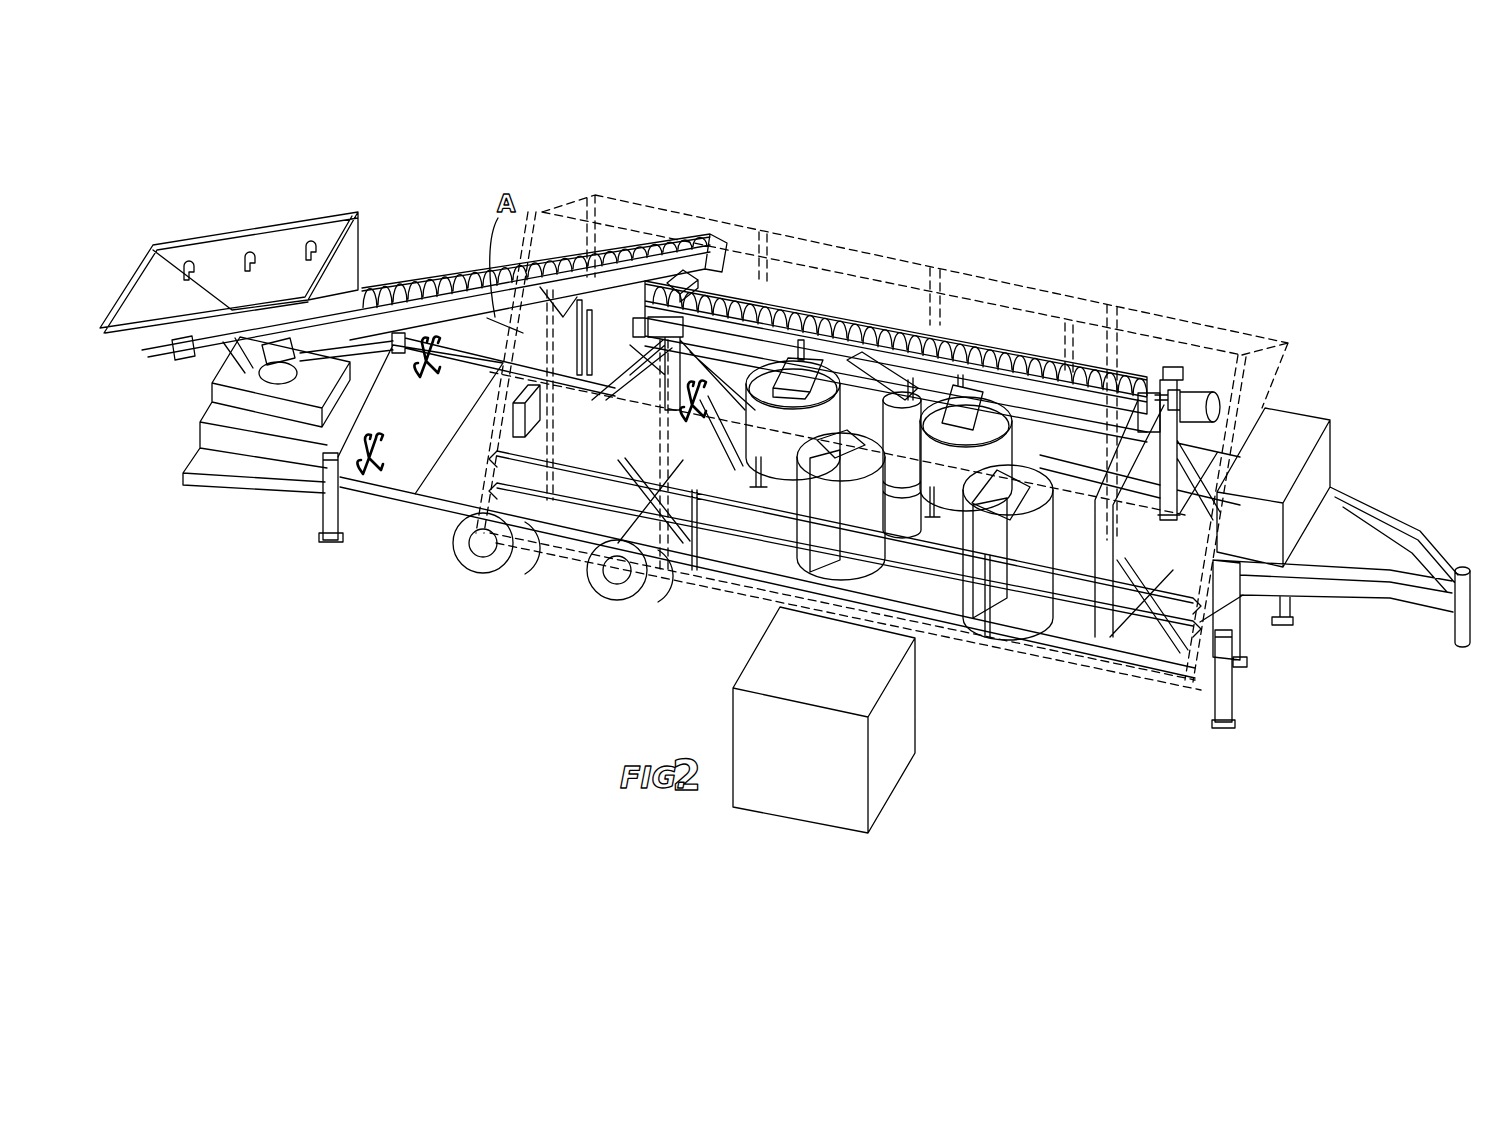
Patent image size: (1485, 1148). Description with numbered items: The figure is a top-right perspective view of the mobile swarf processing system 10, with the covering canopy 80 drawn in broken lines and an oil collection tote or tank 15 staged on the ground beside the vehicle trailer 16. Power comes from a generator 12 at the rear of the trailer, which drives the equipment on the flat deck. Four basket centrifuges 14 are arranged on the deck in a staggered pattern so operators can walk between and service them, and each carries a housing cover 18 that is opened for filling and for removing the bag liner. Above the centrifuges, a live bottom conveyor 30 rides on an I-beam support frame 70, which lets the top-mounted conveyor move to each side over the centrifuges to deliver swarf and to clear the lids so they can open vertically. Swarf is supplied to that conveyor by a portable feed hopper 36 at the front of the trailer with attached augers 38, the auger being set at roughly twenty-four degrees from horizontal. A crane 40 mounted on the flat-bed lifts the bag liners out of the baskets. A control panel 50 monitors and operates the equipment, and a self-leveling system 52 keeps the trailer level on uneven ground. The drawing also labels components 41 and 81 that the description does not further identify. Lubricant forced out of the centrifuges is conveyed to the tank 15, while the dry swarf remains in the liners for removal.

The mobile treatment system 10 is at (490, 605).
The generator 12 is at (1312, 423).
The basket centrifuge 14 is at (800, 490).
The tote or tank 15 is at (811, 776).
The trailer 16 is at (417, 500).
The housing cover 18 is at (767, 380).
The live bottom conveyor 30 is at (948, 347).
The portable feed hopper 36 is at (272, 257).
The auger 38 is at (437, 278).
The crane 40 is at (645, 500).
The support brace 41 is at (717, 510).
The control panel 50 is at (510, 410).
The self-leveling system 52 is at (315, 513).
The I-beam support frame 70 is at (1165, 373).
The canopy 80 is at (847, 262).
The railing 81 is at (937, 593).